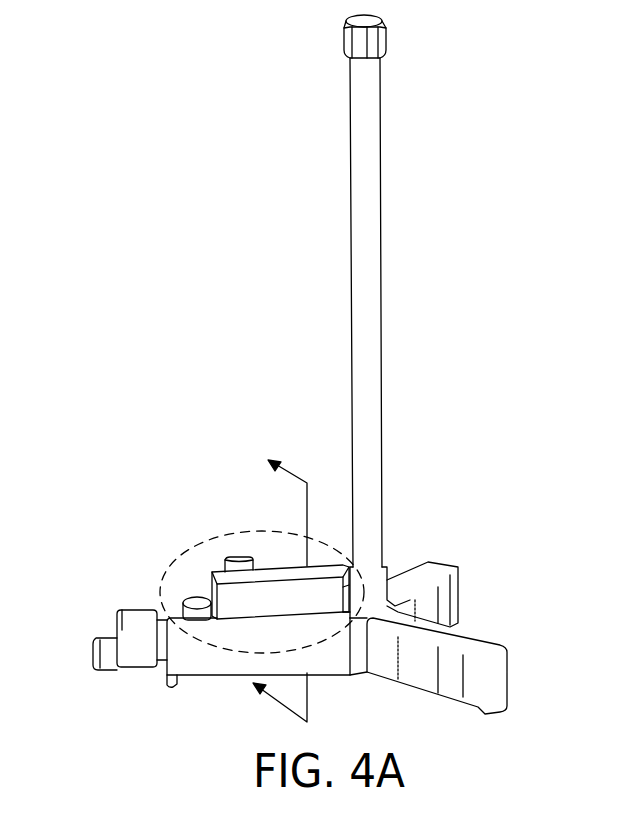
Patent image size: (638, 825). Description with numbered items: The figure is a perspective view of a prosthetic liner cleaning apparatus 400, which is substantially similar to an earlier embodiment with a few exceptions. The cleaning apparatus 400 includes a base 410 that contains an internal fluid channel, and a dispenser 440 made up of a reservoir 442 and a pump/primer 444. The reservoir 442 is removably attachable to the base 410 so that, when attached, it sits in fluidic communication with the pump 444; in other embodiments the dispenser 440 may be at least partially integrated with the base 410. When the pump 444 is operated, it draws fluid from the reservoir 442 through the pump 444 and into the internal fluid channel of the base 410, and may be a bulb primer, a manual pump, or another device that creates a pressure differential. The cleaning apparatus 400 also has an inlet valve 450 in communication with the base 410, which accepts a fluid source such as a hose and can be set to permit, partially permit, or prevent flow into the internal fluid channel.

The cleaning apparatus 400 is at (107, 160).
The base 410 is at (483, 695).
The dispenser 440 is at (195, 562).
The reservoir 442 is at (287, 568).
The pump/primer 444 is at (190, 607).
The inlet valve 450 is at (127, 638).